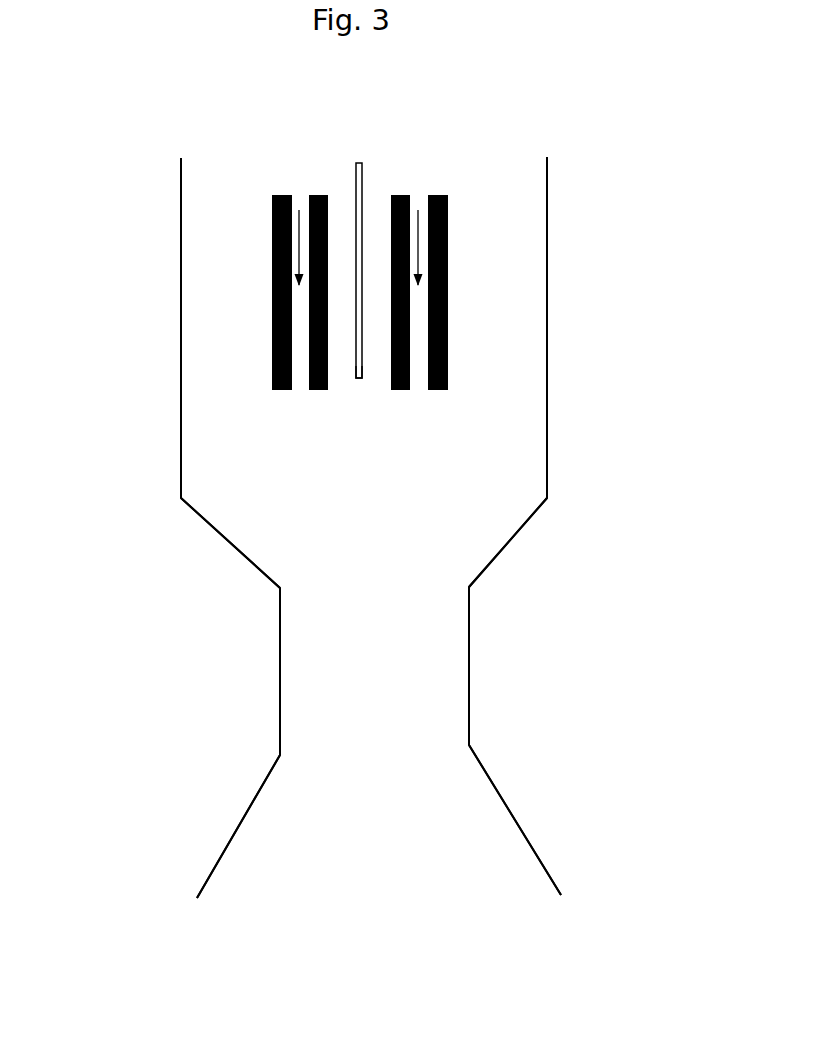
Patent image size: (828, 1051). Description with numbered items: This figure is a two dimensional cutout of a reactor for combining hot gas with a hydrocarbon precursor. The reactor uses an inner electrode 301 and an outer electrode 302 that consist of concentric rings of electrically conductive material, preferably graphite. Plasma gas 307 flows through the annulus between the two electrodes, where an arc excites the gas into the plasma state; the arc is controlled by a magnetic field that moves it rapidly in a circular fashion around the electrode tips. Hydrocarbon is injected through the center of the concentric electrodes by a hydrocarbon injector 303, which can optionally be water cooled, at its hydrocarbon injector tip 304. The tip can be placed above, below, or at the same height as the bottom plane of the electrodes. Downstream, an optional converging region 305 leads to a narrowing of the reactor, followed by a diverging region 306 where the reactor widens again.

The inner electrode 301 is at (322, 393).
The outer electrode 302 is at (263, 233).
The hydrocarbon injector 303 is at (366, 304).
The hydrocarbon injector tip 304 is at (366, 366).
The converging region 305 is at (232, 556).
The diverging region 306 is at (228, 827).
The plasma gas 307 is at (417, 185).